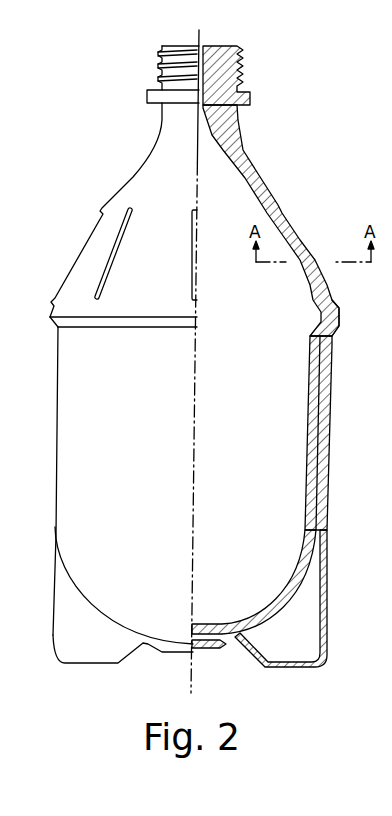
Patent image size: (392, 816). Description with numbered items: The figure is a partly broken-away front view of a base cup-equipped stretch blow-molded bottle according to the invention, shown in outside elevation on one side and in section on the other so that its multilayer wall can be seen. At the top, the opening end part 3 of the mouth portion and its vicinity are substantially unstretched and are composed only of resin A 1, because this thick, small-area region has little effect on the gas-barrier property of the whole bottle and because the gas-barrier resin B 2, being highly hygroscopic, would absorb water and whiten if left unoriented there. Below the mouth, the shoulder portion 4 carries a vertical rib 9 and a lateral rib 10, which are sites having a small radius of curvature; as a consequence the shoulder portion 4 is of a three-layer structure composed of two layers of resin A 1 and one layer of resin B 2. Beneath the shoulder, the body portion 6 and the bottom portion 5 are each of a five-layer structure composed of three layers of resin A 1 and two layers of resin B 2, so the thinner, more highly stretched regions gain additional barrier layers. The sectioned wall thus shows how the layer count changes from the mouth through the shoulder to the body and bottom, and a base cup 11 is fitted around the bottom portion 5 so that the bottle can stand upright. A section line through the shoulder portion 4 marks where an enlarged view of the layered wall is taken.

The resin A 1 is at (339, 316).
The resin B 2 is at (333, 383).
The opening end part 3 is at (237, 50).
The shoulder portion 4 is at (282, 210).
The bottom portion 5 is at (205, 652).
The body portion 6 is at (332, 452).
The vertical rib 9 is at (103, 258).
The lateral rib 10 is at (52, 326).
The base cup 11 is at (60, 634).